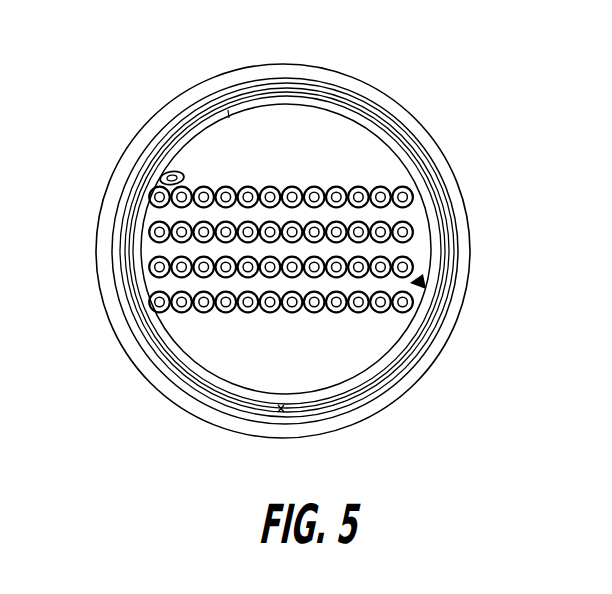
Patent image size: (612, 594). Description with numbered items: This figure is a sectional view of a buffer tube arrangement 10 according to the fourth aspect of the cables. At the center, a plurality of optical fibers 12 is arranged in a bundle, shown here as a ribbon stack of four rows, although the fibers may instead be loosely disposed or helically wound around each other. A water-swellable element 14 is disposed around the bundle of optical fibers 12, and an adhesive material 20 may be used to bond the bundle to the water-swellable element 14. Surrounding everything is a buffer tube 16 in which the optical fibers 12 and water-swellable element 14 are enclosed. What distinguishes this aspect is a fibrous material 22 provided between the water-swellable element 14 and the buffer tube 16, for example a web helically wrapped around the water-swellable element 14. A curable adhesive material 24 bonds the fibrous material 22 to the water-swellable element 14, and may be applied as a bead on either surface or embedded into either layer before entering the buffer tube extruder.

The buffer tube arrangement 10 is at (134, 88).
The optical fibers 12 is at (178, 313).
The water-swellable element 14 is at (136, 206).
The buffer tube 16 is at (223, 431).
The adhesive material 20 is at (166, 172).
The fibrous material 22 is at (195, 389).
The curable adhesive material 24 is at (298, 93).